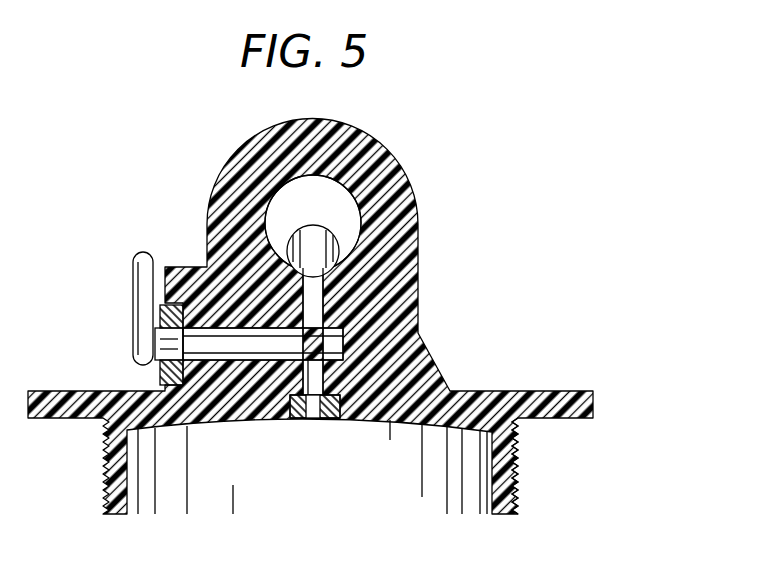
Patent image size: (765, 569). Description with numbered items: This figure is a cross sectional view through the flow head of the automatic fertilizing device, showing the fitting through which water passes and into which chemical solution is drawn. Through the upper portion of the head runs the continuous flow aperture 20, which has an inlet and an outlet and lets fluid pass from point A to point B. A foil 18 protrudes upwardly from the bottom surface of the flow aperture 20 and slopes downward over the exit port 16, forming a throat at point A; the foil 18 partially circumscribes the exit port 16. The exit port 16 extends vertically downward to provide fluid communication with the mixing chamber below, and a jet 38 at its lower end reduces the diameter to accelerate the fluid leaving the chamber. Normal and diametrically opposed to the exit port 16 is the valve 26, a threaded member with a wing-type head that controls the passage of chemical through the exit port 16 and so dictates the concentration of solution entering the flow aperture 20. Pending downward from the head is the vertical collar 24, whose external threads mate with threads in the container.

The exit port 16 is at (305, 420).
The foil 18 is at (330, 247).
The flow aperture 20 is at (327, 193).
The vertical collar 24 is at (523, 478).
The valve 26 is at (237, 340).
The jets 38 is at (322, 420).